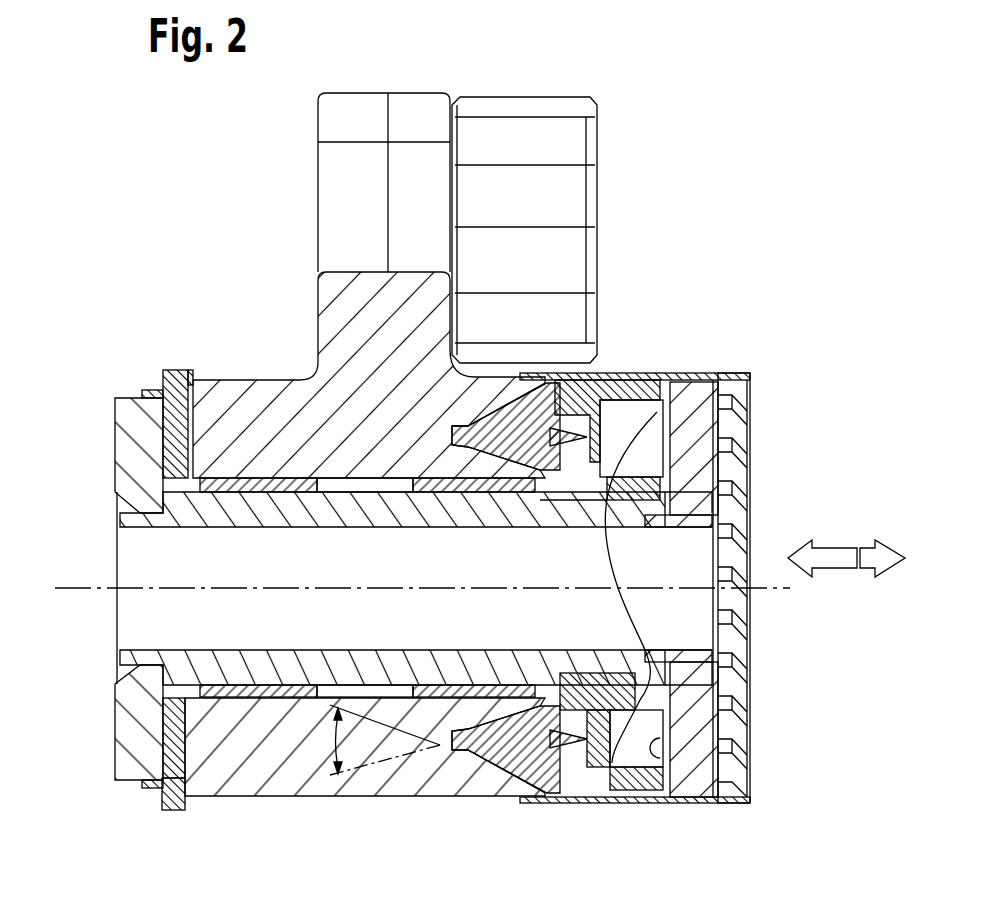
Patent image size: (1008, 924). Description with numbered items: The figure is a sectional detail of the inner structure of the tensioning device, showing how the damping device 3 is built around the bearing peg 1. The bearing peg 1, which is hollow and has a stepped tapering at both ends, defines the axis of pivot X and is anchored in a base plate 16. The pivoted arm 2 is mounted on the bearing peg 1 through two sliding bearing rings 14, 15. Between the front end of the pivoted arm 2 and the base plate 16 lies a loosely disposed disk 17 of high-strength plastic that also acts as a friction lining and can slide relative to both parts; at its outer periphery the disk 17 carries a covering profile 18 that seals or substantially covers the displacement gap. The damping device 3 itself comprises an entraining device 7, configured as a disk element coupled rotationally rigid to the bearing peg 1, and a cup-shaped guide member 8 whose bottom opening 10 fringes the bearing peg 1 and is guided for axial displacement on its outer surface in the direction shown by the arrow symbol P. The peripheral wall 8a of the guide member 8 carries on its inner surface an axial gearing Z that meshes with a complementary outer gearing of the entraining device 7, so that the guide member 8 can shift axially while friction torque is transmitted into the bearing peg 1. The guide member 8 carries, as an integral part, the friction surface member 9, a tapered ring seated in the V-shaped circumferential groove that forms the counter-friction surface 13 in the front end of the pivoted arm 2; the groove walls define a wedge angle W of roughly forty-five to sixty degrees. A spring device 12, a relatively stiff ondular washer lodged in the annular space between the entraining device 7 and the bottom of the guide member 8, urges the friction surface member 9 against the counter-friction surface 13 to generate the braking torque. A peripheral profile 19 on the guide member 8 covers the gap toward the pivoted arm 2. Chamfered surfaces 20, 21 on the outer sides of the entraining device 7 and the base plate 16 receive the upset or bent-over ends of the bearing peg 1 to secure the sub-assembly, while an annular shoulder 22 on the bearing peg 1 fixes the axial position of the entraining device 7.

The bearing peg 1 is at (468, 667).
The pivoted arm 2 is at (233, 410).
The damping device 3 is at (698, 338).
The entraining device 7 is at (705, 452).
The guide member 8 is at (577, 387).
The peripheral wall 8a is at (645, 383).
The friction surface member 9 is at (497, 430).
The bottom opening 10 is at (587, 502).
The spring device 12 is at (612, 765).
The counter-friction surface 13 is at (480, 785).
The sliding bearing ring 14 is at (257, 487).
The sliding bearing ring 15 is at (465, 483).
The base plate 16 is at (130, 760).
The disk 17 is at (178, 737).
The covering profile 18 is at (177, 822).
The peripheral profile 19 is at (540, 828).
The chamfered surface 20 is at (710, 503).
The chamfered surface 21 is at (120, 670).
The annular shoulder 22 is at (665, 510).
The wedge angle W is at (317, 740).
The axis of pivot X is at (70, 585).
The axial gearing Z is at (737, 538).
The arrow symbol P is at (845, 568).